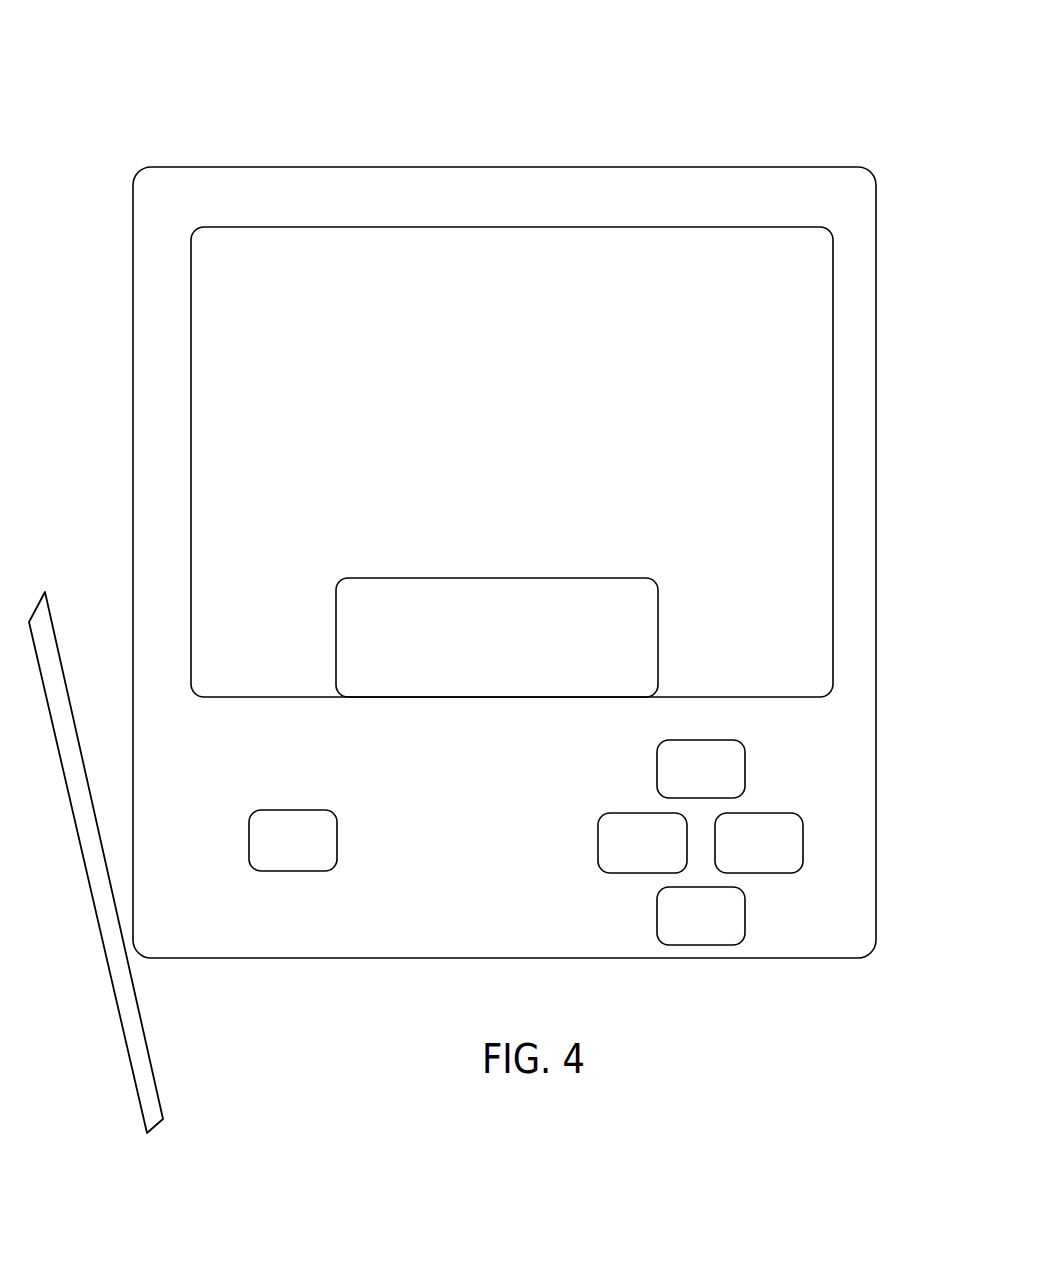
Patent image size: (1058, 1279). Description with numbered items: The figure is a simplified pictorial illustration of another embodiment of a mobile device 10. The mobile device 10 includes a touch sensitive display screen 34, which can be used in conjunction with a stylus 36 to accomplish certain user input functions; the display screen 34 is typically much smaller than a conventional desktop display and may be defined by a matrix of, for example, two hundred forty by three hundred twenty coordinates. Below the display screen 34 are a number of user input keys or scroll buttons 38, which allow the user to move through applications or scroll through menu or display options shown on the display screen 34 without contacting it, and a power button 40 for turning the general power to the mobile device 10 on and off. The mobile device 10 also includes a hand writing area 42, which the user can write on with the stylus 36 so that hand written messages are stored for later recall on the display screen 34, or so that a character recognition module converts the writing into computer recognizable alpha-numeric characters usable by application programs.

The mobile device 10 is at (702, 140).
The touch sensitive display screen 34 is at (322, 285).
The stylus 36 is at (133, 987).
The scroll buttons 38 is at (642, 915).
The power button 40 is at (292, 839).
The hand writing area 42 is at (365, 578).